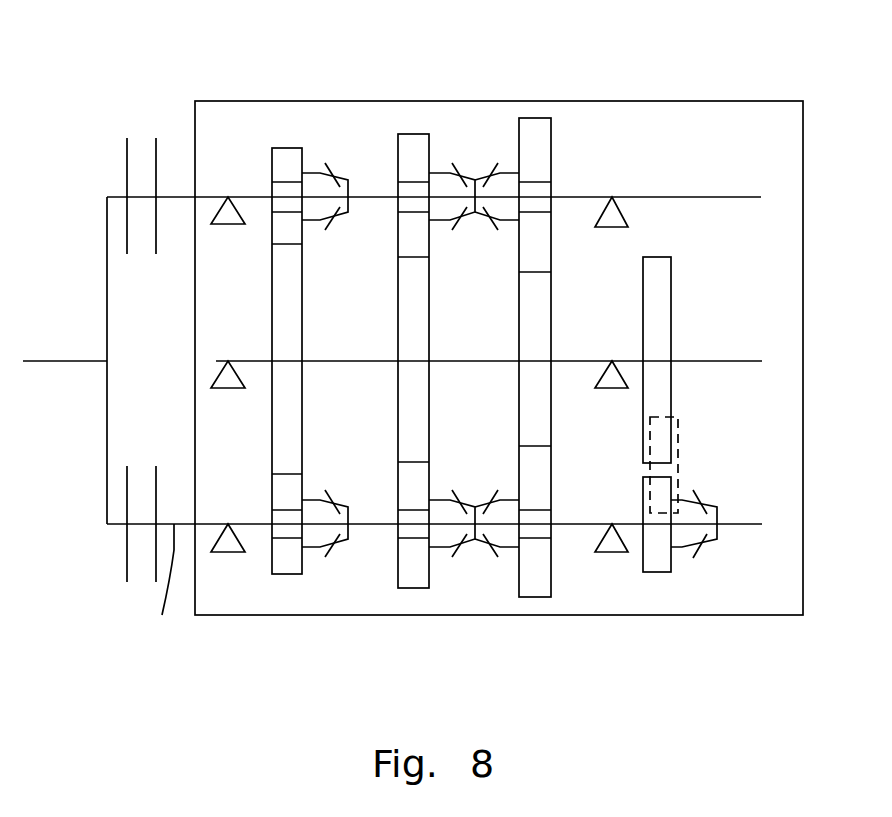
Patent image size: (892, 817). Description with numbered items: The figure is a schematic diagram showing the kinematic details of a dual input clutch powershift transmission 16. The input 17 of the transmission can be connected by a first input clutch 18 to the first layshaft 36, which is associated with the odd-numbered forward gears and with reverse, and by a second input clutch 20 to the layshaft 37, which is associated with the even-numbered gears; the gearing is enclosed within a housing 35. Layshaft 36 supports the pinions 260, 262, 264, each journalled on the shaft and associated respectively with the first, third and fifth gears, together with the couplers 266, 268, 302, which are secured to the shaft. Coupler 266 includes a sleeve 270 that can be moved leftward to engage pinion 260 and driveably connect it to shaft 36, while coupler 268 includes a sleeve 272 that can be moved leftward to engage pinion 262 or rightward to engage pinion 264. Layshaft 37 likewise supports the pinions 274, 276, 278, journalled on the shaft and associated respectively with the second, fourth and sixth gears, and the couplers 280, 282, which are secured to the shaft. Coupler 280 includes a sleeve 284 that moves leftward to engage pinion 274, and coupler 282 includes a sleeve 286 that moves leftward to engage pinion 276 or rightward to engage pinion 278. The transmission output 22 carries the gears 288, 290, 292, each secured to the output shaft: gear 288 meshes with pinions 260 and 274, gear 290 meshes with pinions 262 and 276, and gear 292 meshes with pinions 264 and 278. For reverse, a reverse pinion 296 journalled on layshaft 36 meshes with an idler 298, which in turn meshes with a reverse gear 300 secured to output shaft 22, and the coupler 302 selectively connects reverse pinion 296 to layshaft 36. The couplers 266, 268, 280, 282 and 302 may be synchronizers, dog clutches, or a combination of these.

The dual input clutch powershift transmission 16 is at (763, 52).
The input 17 is at (72, 361).
The first input clutch 18 is at (127, 548).
The second input clutch 20 is at (127, 172).
The transmission output 22 is at (730, 361).
The transmission housing 35 is at (450, 101).
The first layshaft 36 is at (434, 586).
The layshaft 37 is at (177, 197).
The pinion 260 is at (272, 499).
The pinion 262 is at (397, 494).
The pinion 264 is at (552, 490).
The coupler 266 is at (350, 527).
The coupler 268 is at (485, 532).
The sleeve 270 is at (332, 492).
The sleeve 272 is at (472, 502).
The pinion 274 is at (283, 147).
The pinion 276 is at (413, 134).
The pinion 278 is at (534, 118).
The coupler 280 is at (352, 185).
The coupler 282 is at (470, 223).
The sleeve 284 is at (338, 218).
The sleeve 286 is at (463, 167).
The gear 288 is at (303, 407).
The gear 290 is at (430, 407).
The gear 292 is at (552, 423).
The reverse pinion 296 is at (650, 572).
The idler 298 is at (678, 430).
The reverse gear 300 is at (643, 308).
The coupler 302 is at (717, 513).